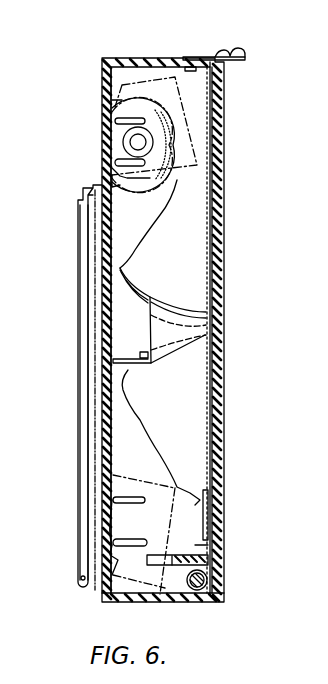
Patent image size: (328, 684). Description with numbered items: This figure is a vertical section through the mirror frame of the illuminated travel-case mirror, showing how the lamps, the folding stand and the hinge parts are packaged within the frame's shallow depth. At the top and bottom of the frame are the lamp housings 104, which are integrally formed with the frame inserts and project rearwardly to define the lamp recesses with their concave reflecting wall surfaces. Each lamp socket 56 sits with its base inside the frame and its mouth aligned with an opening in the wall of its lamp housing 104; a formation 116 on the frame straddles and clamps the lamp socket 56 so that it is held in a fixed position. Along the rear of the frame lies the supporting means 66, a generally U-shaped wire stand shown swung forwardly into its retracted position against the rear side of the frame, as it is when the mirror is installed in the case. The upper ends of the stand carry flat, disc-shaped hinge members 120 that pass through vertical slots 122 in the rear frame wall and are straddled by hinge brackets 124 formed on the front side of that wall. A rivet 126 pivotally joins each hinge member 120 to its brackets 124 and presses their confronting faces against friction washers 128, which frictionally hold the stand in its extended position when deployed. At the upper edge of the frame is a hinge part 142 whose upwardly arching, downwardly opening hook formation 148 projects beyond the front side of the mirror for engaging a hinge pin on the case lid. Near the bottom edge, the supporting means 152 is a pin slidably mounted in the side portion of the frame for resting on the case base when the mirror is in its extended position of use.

The lamp socket 56 is at (203, 520).
The supporting means 66 is at (78, 326).
The lamp housing 104 is at (163, 272).
The formation 116 is at (108, 168).
The hinge member 120 is at (165, 147).
The vertical slot 122 is at (111, 103).
The hinge bracket 124 is at (165, 118).
The rivet 126 is at (130, 140).
The friction washer 128 is at (170, 129).
The hinge part 142 is at (181, 56).
The hook formation 148 is at (246, 58).
The supporting means 152 is at (208, 580).